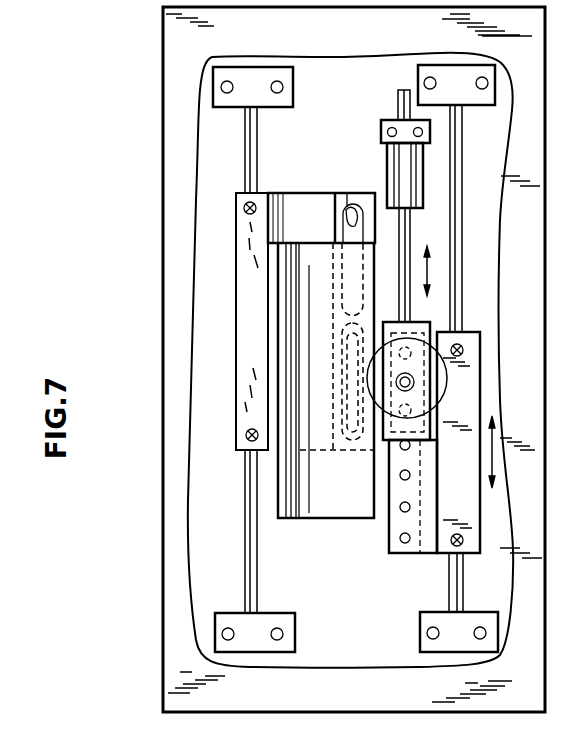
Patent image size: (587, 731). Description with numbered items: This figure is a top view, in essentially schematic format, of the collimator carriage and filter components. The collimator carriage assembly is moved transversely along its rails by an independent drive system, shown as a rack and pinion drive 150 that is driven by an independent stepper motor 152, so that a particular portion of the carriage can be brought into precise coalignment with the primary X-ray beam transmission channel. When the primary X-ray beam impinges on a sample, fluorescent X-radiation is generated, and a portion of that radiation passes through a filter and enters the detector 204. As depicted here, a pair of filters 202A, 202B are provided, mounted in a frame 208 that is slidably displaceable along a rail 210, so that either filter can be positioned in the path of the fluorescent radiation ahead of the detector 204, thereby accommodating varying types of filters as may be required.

The rack and pinion drive 150 is at (411, 232).
The stepper motor 152 is at (388, 177).
The filter 202A is at (345, 205).
The filter 202B is at (345, 428).
The detector 204 is at (348, 519).
The frame 208 is at (300, 205).
The rail 210 is at (246, 512).